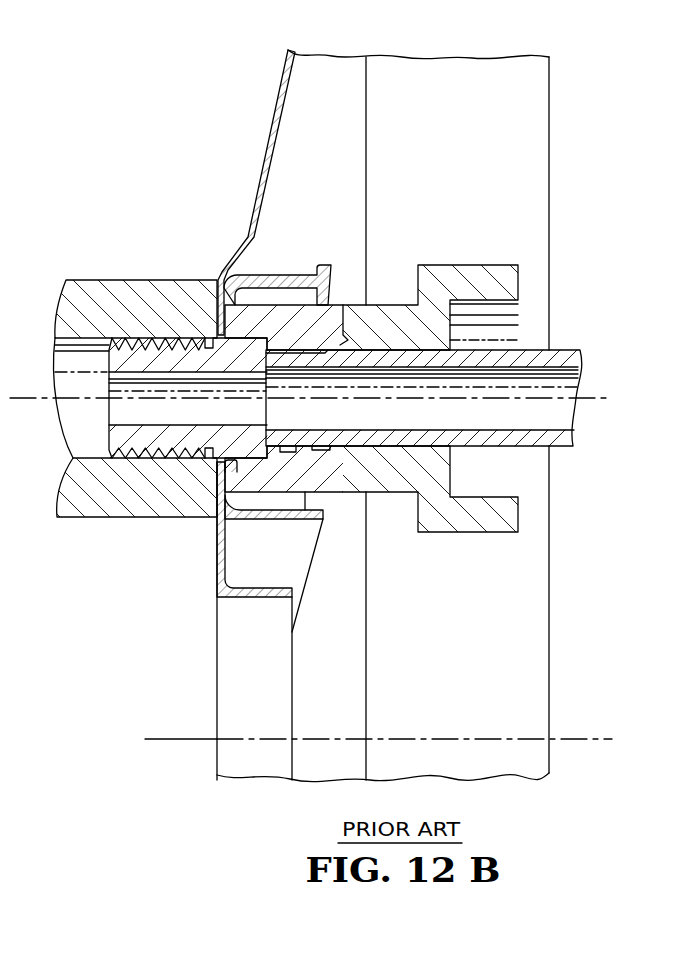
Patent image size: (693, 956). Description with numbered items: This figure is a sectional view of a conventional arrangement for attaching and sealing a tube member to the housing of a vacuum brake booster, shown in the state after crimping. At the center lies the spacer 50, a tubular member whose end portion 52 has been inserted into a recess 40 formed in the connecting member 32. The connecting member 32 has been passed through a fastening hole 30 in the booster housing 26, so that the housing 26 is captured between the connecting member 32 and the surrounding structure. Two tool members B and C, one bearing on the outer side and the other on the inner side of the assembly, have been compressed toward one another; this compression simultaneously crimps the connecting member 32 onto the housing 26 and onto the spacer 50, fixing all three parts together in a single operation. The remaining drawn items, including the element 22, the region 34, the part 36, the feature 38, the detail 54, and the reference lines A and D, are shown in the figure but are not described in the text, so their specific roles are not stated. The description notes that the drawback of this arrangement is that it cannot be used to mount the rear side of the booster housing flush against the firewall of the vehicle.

The tube 22 is at (267, 139).
The housing 26 is at (217, 580).
The fastening hole 30 is at (217, 467).
The connecting member 32 is at (367, 364).
The body portion 34 is at (272, 325).
The fitting 36 is at (220, 342).
The threads 38 is at (112, 367).
The recess 40 is at (317, 443).
The spacer 50 is at (558, 447).
The end portion 52 is at (308, 355).
The seal 54 is at (287, 445).
The axis A is at (597, 390).
The tool member B is at (133, 279).
The tool member C is at (503, 266).
The groove D is at (338, 338).